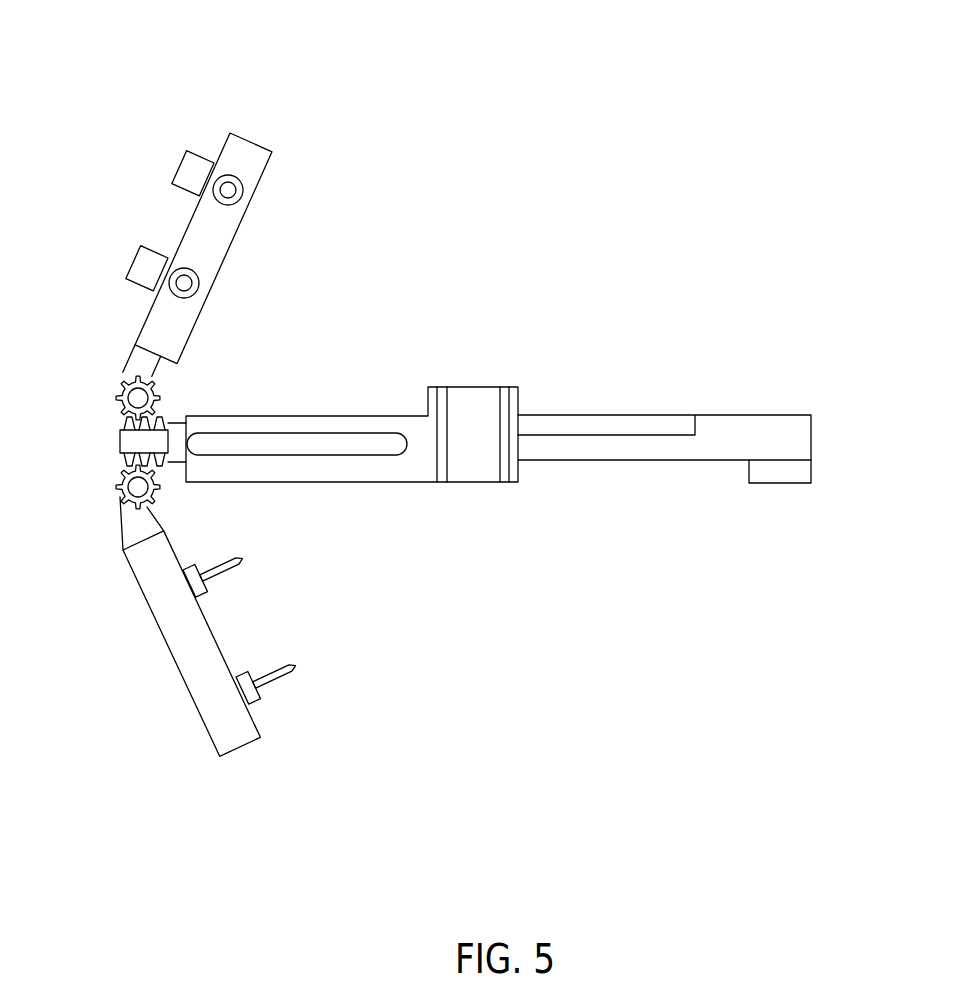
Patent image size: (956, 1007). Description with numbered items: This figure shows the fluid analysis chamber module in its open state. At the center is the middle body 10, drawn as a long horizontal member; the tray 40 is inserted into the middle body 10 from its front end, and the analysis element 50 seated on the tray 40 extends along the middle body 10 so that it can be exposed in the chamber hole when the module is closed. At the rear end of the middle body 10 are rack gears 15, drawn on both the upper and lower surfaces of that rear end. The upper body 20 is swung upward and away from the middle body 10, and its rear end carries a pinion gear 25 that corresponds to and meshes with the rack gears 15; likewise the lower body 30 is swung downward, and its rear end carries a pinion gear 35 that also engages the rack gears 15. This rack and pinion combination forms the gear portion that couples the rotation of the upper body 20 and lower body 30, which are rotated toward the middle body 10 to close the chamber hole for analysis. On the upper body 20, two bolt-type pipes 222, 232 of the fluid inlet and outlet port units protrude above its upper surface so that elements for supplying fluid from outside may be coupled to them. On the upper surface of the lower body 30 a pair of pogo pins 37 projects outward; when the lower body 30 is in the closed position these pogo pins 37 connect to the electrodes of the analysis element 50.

The middle body 10 is at (471, 368).
The rack gears 15 is at (119, 430).
The upper body 20 is at (260, 118).
The bolt-type pipe 222 is at (173, 170).
The bolt-type pipe 232 is at (128, 262).
The pinion gear 25 is at (117, 398).
The lower body 30 is at (248, 783).
The pinion gear 35 is at (117, 489).
The pogo pins 37 is at (262, 700).
The tray 40 is at (749, 505).
The analysis element 50 is at (608, 403).